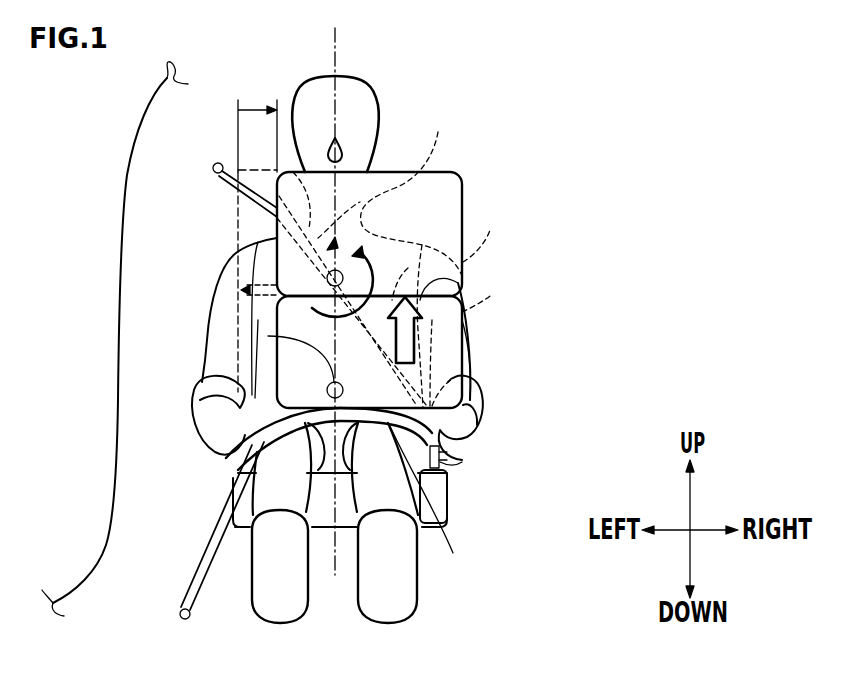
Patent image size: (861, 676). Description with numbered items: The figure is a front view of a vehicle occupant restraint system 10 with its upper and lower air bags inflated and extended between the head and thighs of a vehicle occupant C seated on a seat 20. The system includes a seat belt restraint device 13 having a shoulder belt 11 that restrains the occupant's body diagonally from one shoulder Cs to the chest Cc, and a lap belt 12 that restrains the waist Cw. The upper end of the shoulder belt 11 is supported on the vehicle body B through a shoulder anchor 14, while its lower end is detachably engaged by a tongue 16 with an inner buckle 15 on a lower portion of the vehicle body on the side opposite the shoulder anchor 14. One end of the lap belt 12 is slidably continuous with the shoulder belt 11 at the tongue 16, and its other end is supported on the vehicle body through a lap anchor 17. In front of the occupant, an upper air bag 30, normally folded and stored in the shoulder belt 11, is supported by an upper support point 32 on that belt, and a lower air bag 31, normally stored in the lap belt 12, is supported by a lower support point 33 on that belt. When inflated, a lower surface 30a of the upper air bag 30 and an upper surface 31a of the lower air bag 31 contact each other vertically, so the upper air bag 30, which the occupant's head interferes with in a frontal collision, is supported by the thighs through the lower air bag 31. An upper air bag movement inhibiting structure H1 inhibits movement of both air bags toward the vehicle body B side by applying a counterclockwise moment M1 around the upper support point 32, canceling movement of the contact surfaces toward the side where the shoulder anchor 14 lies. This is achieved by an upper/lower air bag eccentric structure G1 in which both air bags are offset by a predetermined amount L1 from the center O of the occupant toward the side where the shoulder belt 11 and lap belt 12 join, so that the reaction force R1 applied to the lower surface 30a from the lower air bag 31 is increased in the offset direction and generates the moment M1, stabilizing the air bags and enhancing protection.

The vehicle occupant restraint system 10 is at (508, 92).
The shoulder belt 11 is at (276, 210).
The lap belt 12 is at (430, 510).
The seat belt restraint device 13 is at (391, 255).
The shoulder anchor 14 is at (213, 168).
The inner buckle 15 is at (447, 468).
The tongue 16 is at (462, 438).
The lap anchor 17 is at (180, 614).
The seat 20 is at (465, 495).
The upper air bag 30 is at (297, 190).
The lower surface 30a is at (437, 298).
The lower air bag 31 is at (290, 381).
The upper surface 31a is at (465, 277).
The upper support point 32 is at (326, 278).
The lower support point 33 is at (268, 337).
The center of the vehicle occupant O is at (337, 57).
The vehicle occupant C is at (398, 112).
The vehicle body B is at (117, 348).
The predetermined amount L1 is at (255, 108).
The upper/lower air bag eccentric structure G1 is at (258, 166).
The shoulder Cs is at (278, 235).
The waist Cw is at (213, 446).
The chest Cc is at (405, 272).
The moment M1 is at (357, 270).
The reaction force R1 is at (440, 342).
The upper air bag movement inhibiting structure H1 is at (488, 360).